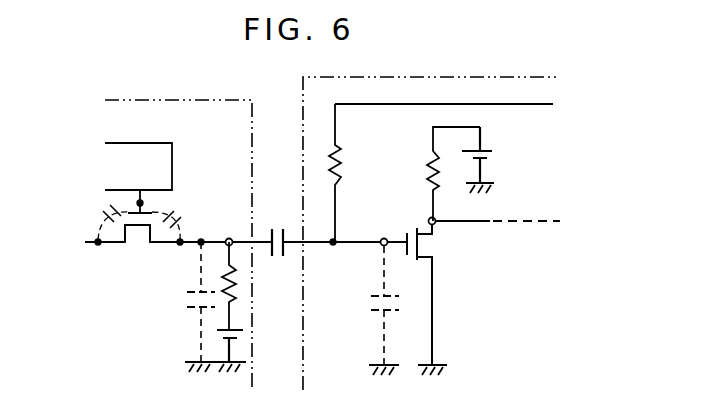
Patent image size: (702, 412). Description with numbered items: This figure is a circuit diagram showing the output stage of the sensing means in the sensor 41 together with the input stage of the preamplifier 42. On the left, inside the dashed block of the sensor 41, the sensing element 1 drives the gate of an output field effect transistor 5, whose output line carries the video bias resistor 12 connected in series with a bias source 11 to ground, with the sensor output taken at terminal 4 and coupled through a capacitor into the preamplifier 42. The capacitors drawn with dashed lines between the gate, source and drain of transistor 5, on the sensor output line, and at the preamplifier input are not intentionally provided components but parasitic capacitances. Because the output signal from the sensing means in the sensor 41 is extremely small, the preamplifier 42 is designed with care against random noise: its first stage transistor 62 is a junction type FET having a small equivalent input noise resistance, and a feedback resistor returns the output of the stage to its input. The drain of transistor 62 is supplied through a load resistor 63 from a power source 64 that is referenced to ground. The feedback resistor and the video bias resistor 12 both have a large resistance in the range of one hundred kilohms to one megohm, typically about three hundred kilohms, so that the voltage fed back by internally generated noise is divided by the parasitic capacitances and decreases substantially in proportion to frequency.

The input device 1 is at (150, 143).
The output terminal 4 is at (229, 243).
The field effect transistor 5 is at (140, 237).
The bias source 11 is at (206, 331).
The video bias resistor 12 is at (216, 272).
The sensor 41 is at (169, 100).
The preamplifier 42 is at (458, 78).
The transistor 62 is at (433, 244).
The load resistor 63 is at (428, 164).
The power source 64 is at (494, 158).